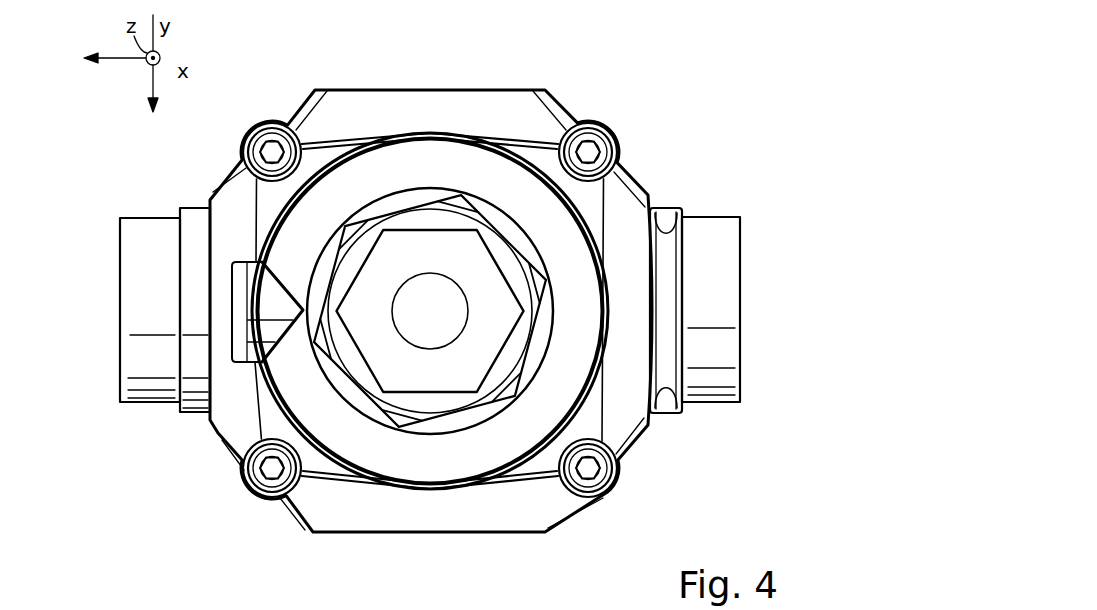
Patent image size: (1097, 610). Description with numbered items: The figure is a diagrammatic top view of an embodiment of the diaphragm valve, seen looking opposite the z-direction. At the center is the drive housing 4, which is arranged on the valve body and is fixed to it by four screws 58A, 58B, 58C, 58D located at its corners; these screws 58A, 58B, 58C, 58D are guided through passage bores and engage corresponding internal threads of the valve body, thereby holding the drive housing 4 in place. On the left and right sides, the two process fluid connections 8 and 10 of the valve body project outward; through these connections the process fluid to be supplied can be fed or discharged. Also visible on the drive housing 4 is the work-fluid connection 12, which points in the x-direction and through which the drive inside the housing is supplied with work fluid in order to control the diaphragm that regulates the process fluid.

The drive housing 4 is at (457, 108).
The process fluid connection 8 is at (155, 383).
The process fluid connection 10 is at (720, 348).
The work-fluid connection 12 is at (257, 296).
The screw 58A is at (260, 120).
The screw 58B is at (610, 133).
The screw 58C is at (610, 485).
The screw 58D is at (253, 485).